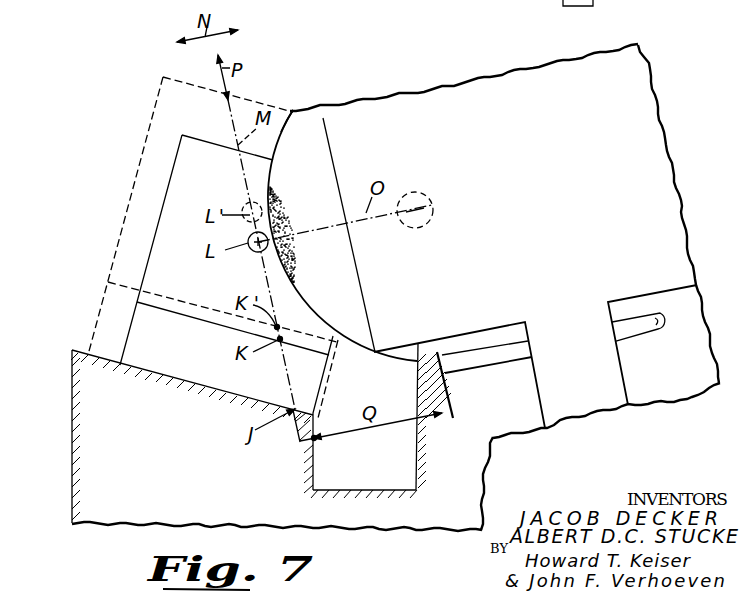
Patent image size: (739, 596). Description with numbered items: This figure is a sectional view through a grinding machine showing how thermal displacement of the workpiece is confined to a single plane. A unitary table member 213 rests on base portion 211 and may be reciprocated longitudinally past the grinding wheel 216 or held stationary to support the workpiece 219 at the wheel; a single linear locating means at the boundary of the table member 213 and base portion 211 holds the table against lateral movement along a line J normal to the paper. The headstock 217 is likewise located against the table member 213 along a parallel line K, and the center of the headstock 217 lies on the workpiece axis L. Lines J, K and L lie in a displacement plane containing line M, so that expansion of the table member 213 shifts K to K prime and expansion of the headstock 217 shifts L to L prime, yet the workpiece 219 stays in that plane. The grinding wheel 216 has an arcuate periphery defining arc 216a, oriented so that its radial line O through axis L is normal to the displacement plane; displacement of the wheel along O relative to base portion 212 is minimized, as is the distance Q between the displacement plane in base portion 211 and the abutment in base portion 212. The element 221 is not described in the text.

The base portion 211 is at (72, 429).
The base portion 212 is at (452, 405).
The table member 213 is at (129, 328).
The grinding wheel 216 is at (294, 290).
The arc 216a is at (294, 113).
The headstock 217 is at (156, 230).
The workpiece 219 is at (245, 203).
The slot 221 is at (633, 334).